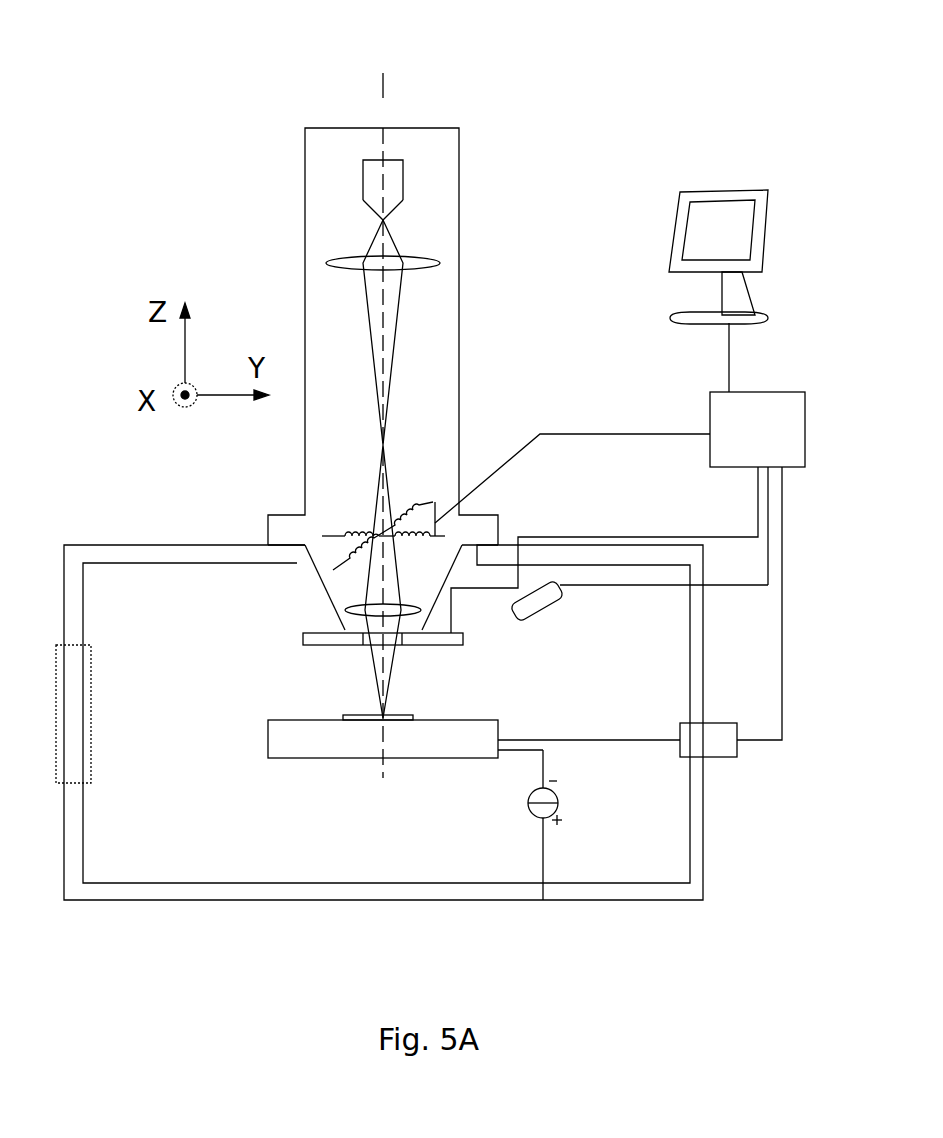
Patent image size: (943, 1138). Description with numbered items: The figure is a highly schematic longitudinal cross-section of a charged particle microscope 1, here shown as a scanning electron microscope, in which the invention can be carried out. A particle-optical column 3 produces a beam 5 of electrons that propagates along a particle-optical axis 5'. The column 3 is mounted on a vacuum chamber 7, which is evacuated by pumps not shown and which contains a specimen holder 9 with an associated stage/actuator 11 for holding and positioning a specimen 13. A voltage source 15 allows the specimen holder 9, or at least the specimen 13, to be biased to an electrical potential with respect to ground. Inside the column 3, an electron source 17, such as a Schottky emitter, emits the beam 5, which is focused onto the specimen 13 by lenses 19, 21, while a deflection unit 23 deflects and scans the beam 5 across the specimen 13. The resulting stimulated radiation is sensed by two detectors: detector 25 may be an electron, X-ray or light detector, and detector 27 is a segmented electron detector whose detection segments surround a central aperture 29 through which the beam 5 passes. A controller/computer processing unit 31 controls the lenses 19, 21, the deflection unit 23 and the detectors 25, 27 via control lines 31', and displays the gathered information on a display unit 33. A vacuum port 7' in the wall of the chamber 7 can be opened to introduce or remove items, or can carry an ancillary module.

The charged particle microscope 1 is at (168, 80).
The particle-optical column 3 is at (258, 228).
The beam of charged particles 5 is at (440, 469).
The particle-optical axis 5' is at (432, 425).
The vacuum chamber 7 is at (412, 687).
The vacuum port 7' is at (118, 714).
The specimen holder 9 is at (288, 747).
The stage/actuator 11 is at (690, 733).
The specimen 13 is at (412, 715).
The voltage source 15 is at (530, 805).
The electron source 17 is at (383, 182).
The lens 19 is at (428, 266).
The lens 21 is at (412, 604).
The deflection unit 23 is at (418, 507).
The detector 25 is at (548, 603).
The segmented electron detector 27 is at (308, 608).
The central aperture 29 is at (372, 655).
The controller/computer processing unit 31 is at (711, 395).
The control lines 31' is at (616, 587).
The display unit 33 is at (728, 238).